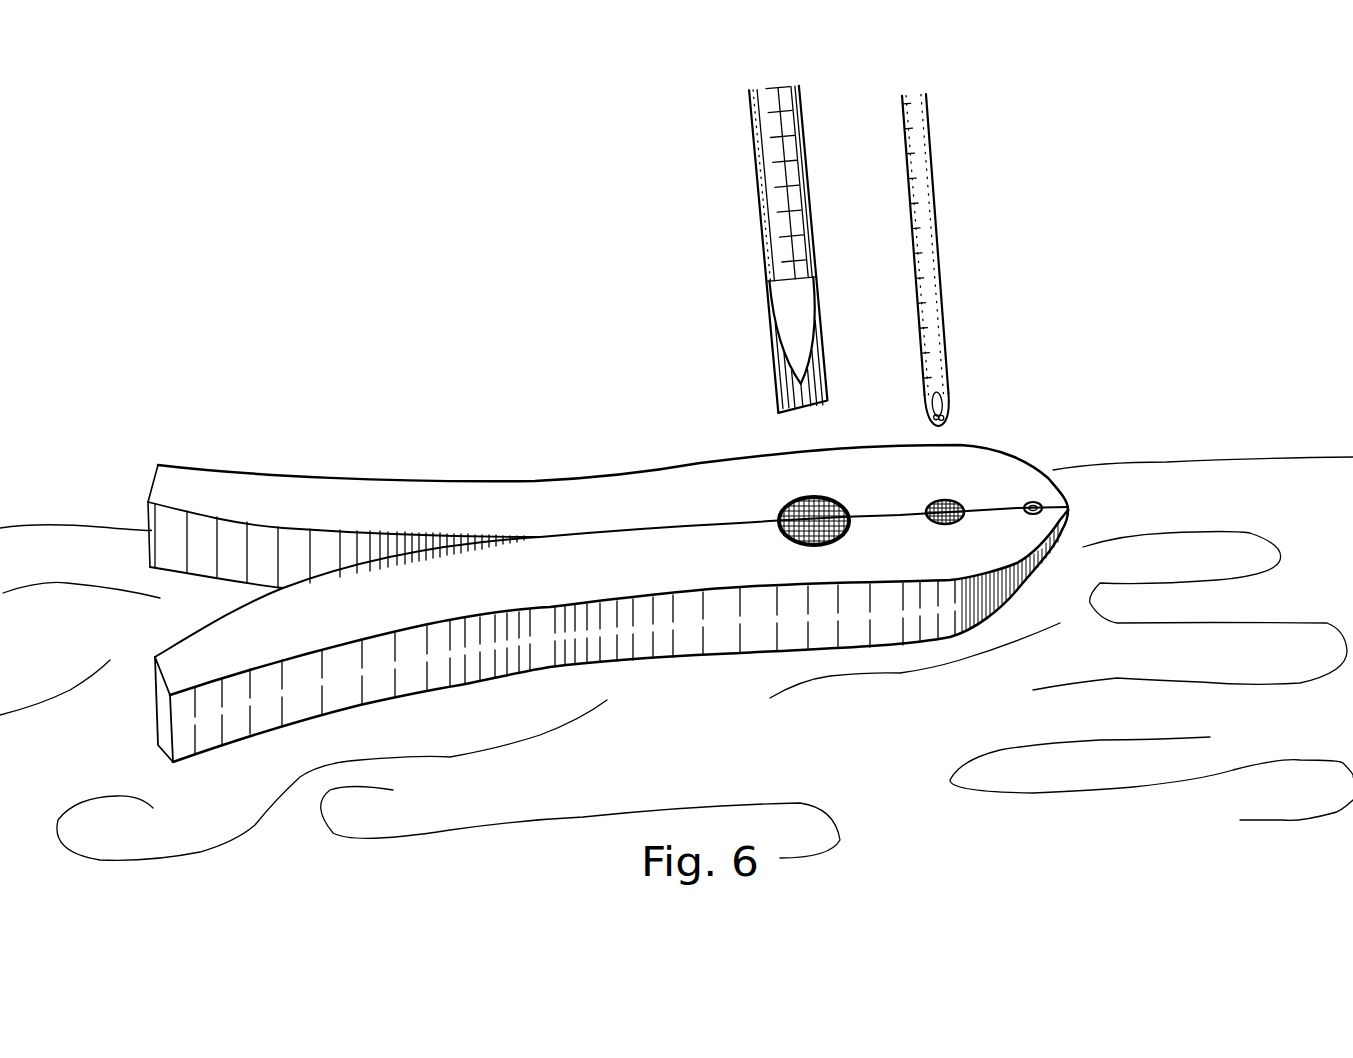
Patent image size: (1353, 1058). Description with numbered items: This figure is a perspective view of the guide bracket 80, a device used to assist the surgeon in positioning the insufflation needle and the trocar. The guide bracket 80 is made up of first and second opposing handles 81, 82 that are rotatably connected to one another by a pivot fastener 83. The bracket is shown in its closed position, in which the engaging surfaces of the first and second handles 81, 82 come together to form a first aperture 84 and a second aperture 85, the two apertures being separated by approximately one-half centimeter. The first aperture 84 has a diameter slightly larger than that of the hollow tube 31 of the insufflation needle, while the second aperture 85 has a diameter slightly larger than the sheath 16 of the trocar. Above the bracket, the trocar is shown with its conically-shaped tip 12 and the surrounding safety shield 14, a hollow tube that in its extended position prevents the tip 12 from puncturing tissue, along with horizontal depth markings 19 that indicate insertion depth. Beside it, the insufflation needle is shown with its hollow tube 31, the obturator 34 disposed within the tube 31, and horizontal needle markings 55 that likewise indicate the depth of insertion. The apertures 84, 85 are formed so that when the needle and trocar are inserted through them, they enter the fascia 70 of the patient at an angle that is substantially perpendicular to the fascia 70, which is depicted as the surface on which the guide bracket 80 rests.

The conically-shaped tip 12 is at (792, 313).
The safety shield 14 is at (790, 393).
The sheath 16 is at (773, 249).
The horizontal depth markings 19 is at (780, 137).
The hollow tube 31 is at (966, 260).
The obturator 34 is at (950, 417).
The horizontal needle markings 55 is at (917, 163).
The fascia 70 is at (1093, 577).
The guide bracket 80 is at (660, 513).
The first handle 81 is at (228, 495).
The second handle 82 is at (277, 635).
The pivot fastener 83 is at (1038, 502).
The first aperture 84 is at (958, 500).
The second aperture 85 is at (780, 510).